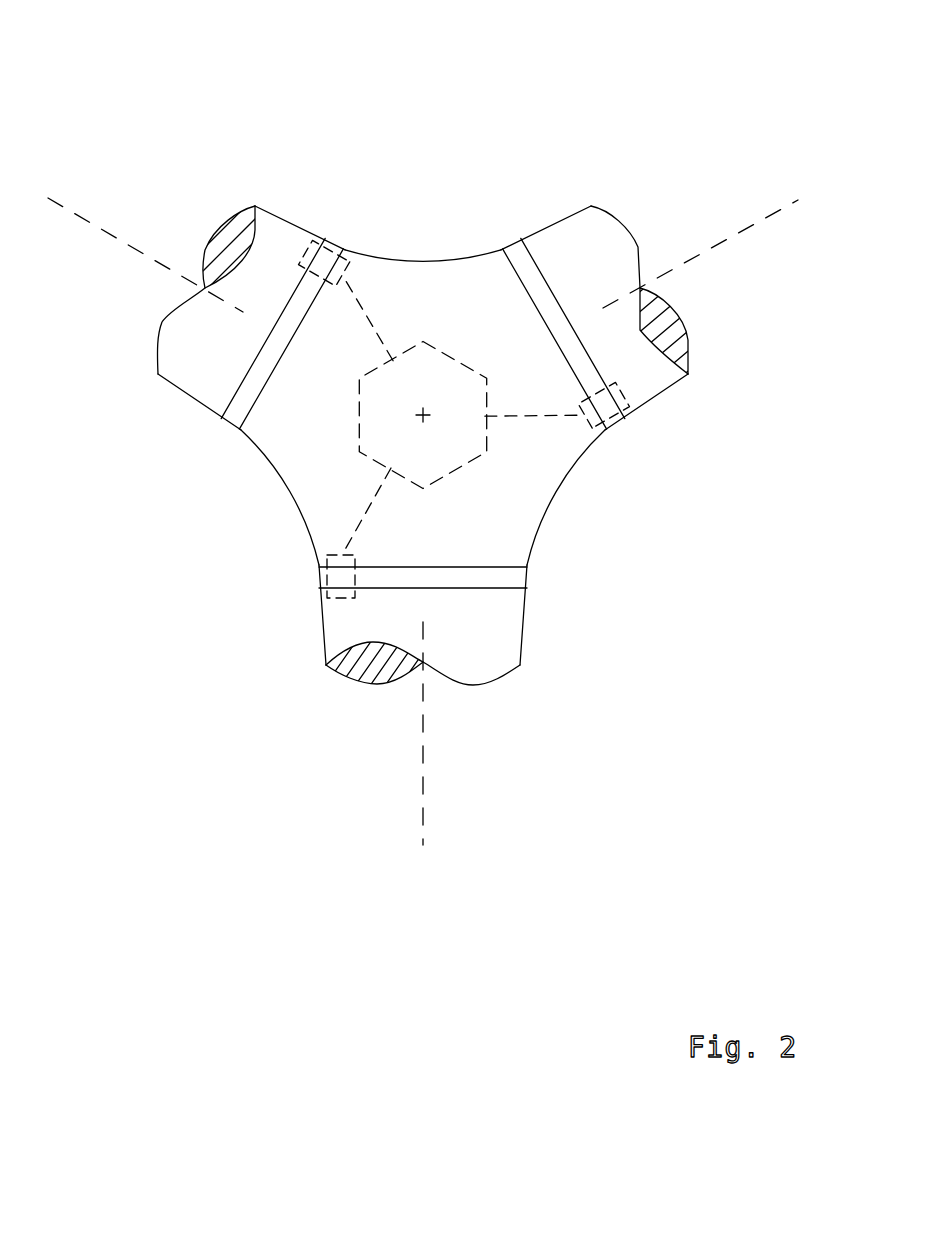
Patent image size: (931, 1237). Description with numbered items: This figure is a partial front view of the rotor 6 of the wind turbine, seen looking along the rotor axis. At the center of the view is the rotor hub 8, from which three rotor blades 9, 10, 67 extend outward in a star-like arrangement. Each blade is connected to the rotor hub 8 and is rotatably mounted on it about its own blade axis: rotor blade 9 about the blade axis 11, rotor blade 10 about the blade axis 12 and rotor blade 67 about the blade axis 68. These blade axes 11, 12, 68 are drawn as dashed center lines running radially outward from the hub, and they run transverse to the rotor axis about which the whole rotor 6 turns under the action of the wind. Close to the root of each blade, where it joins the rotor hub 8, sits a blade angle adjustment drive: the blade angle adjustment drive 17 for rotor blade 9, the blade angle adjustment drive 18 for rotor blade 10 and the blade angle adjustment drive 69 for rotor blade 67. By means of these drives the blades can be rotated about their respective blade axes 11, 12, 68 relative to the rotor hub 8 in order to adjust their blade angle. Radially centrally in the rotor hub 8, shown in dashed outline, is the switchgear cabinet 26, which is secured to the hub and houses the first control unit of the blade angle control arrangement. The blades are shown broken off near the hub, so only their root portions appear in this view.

The rotor 6 is at (443, 93).
The rotor hub 8 is at (288, 488).
The rotor blade 9 is at (183, 381).
The rotor blade 10 is at (517, 638).
The blade axis 11 is at (98, 230).
The blade axis 12 is at (423, 788).
The blade angle adjustment drive 17 is at (315, 237).
The blade angle adjustment drive 18 is at (326, 590).
The switchgear cabinet 26 is at (463, 463).
The rotor blade 67 is at (577, 220).
The blade axis 68 is at (740, 230).
The blade angle adjustment drive 69 is at (630, 412).